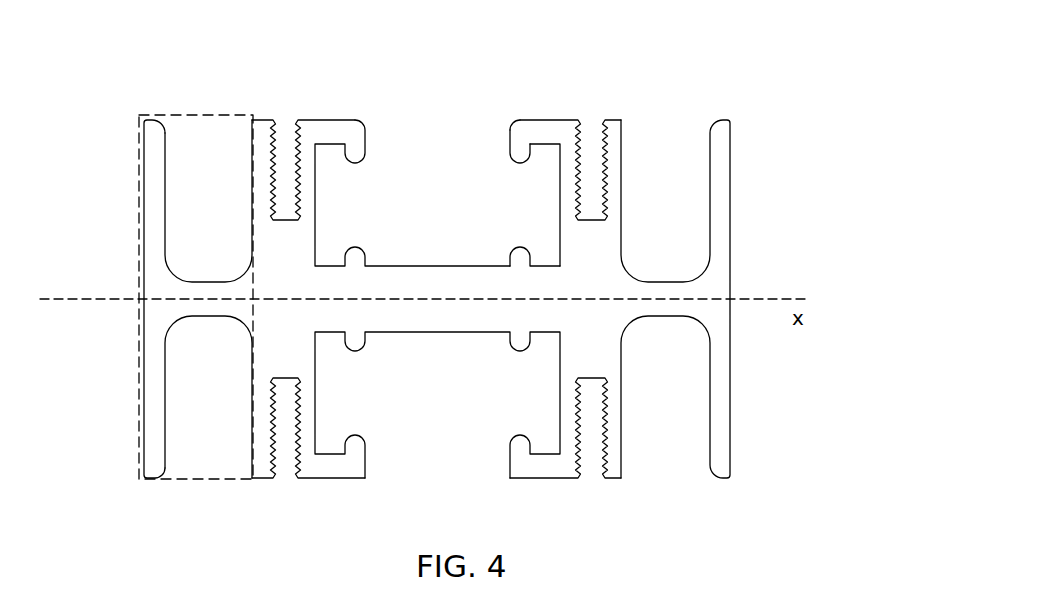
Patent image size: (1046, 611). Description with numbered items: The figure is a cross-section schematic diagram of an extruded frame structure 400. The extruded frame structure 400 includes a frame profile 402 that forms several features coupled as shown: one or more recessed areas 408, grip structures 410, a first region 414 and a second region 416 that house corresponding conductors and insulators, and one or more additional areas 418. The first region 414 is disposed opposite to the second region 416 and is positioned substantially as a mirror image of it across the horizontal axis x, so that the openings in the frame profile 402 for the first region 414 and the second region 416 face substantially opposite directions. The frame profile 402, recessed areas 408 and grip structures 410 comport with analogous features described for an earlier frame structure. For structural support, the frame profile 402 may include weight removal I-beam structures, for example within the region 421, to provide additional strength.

The extruded frame structure 400 is at (462, 276).
The frame profile 402 is at (158, 342).
The recessed areas 408 is at (293, 450).
The grip structures 410 is at (517, 147).
The first region 414 is at (511, 193).
The second region 416 is at (458, 414).
The additional areas 418 is at (236, 201).
The region 421 is at (172, 115).